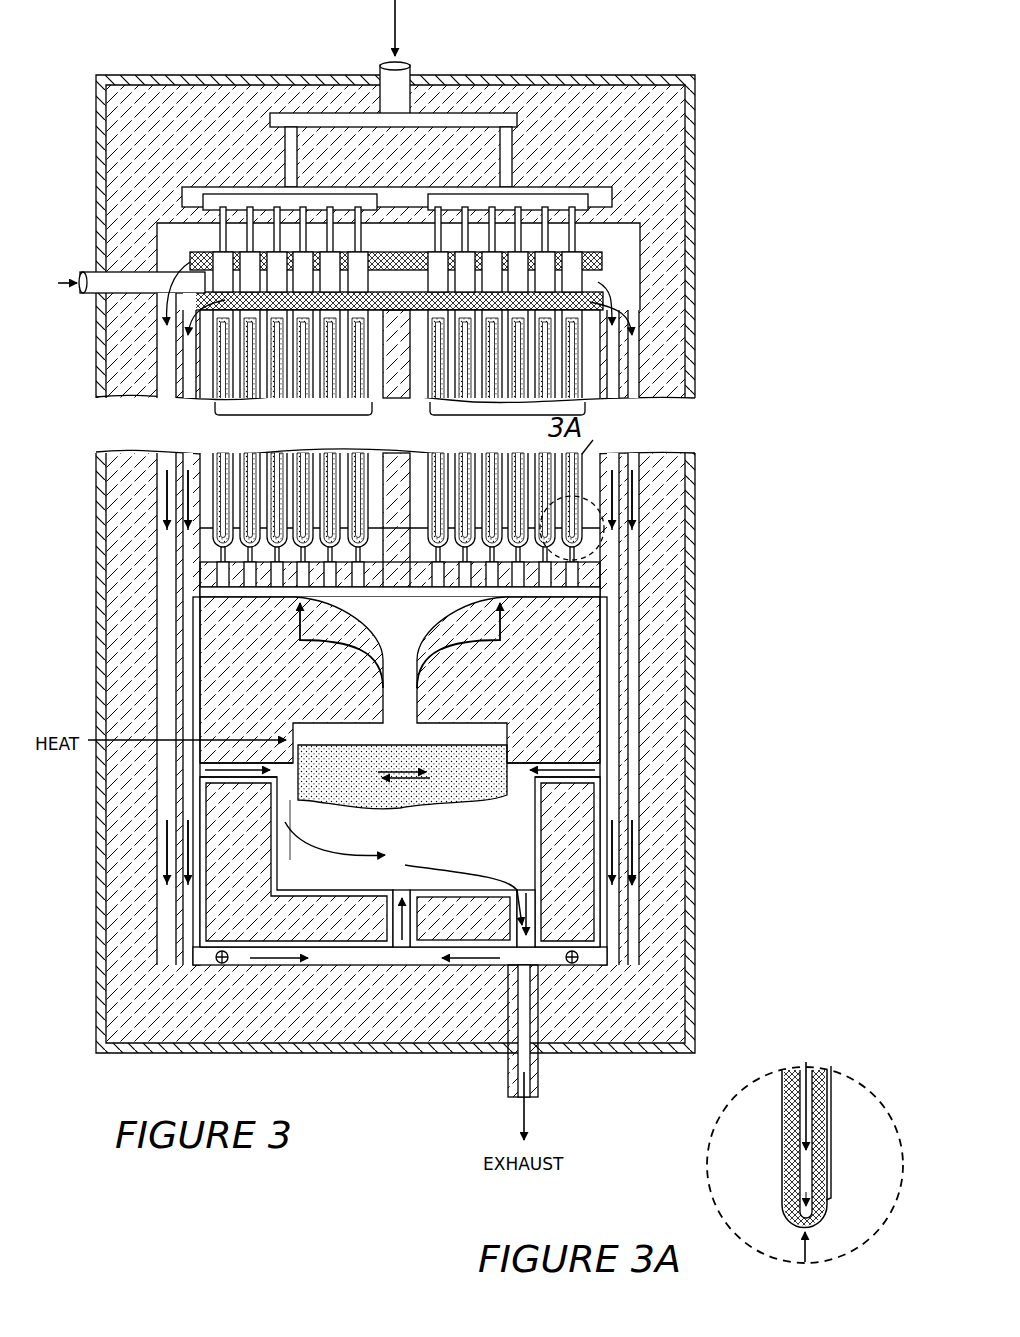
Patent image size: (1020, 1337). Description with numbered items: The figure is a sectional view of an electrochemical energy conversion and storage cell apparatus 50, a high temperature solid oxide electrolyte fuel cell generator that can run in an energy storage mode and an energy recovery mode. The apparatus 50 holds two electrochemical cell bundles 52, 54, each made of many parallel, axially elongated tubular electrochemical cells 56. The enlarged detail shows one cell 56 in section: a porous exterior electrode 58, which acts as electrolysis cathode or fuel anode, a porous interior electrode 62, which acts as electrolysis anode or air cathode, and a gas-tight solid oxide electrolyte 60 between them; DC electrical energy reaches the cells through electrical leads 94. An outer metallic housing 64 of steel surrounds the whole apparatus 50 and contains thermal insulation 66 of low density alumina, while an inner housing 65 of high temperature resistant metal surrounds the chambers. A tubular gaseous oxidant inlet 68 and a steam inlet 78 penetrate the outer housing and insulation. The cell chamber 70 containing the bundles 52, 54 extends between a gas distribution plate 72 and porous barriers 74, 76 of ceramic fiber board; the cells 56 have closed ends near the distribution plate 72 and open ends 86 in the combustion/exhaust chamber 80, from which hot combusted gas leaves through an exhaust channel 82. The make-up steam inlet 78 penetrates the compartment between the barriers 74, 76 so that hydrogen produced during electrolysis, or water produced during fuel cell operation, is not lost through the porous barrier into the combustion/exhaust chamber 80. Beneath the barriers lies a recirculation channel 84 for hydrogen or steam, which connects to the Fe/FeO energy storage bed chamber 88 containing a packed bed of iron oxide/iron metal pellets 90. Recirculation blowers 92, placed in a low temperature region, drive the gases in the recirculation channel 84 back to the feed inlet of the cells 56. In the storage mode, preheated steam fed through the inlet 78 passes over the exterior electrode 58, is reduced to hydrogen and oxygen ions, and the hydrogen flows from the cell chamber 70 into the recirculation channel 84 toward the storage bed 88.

In FIG. 3, the electrochemical energy conversion and storage cell apparatus 50 is at (141, 1092).
In FIG. 3, the electrochemical cell bundle 52 is at (220, 416).
In FIG. 3, the electrochemical cell bundle 54 is at (517, 446).
In FIG. 3, the tubular electrochemical cell 56 is at (215, 540).
In FIG. 3A, the tubular electrochemical cell 56 is at (771, 1146).
In FIG. 3A, the porous exterior electrode 58 is at (781, 1170).
In FIG. 3A, the solid oxide electrolyte 60 is at (785, 1128).
In FIG. 3A, the porous interior electrode 62 is at (797, 1078).
In FIG. 3, the outer metallic housing 64 is at (590, 76).
In FIG. 3, the inner housing 65 is at (635, 355).
In FIG. 3, the thermal insulation 66 is at (120, 165).
In FIG. 3, the gaseous oxidant inlet 68 is at (420, 68).
In FIG. 3, the cell chamber 70 is at (600, 453).
In FIG. 3, the gas distribution plate 72 is at (197, 620).
In FIG. 3, the porous barrier 74 is at (603, 302).
In FIG. 3, the porous barrier 76 is at (597, 245).
In FIG. 3, the steam inlet 78 is at (103, 292).
In FIG. 3, the combustion/exhaust chamber 80 is at (636, 252).
In FIG. 3, the exhaust channel 82 is at (175, 688).
In FIG. 3, the recirculation channel 84 is at (175, 770).
In FIG. 3, the open ends 86 is at (228, 250).
In FIG. 3, the Fe/FeO energy storage bed chamber 88 is at (318, 802).
In FIG. 3, the iron oxide/iron metal pellets 90 is at (415, 802).
In FIG. 3, the recirculation blowers 92 is at (216, 957).
In FIG. 3A, the electrical leads 94 is at (834, 1072).